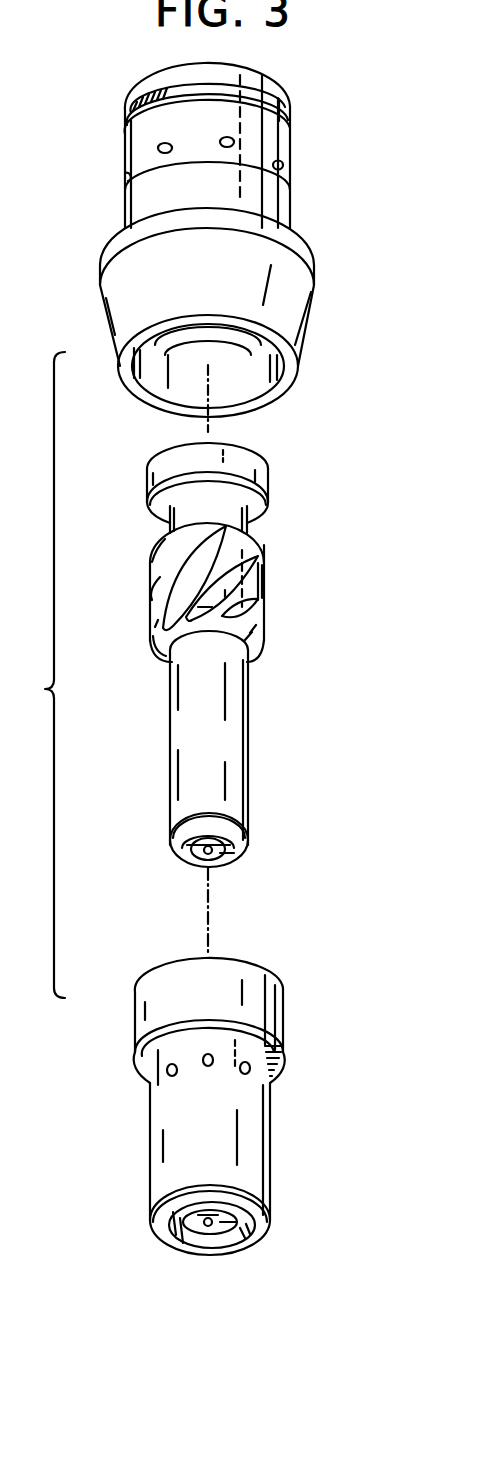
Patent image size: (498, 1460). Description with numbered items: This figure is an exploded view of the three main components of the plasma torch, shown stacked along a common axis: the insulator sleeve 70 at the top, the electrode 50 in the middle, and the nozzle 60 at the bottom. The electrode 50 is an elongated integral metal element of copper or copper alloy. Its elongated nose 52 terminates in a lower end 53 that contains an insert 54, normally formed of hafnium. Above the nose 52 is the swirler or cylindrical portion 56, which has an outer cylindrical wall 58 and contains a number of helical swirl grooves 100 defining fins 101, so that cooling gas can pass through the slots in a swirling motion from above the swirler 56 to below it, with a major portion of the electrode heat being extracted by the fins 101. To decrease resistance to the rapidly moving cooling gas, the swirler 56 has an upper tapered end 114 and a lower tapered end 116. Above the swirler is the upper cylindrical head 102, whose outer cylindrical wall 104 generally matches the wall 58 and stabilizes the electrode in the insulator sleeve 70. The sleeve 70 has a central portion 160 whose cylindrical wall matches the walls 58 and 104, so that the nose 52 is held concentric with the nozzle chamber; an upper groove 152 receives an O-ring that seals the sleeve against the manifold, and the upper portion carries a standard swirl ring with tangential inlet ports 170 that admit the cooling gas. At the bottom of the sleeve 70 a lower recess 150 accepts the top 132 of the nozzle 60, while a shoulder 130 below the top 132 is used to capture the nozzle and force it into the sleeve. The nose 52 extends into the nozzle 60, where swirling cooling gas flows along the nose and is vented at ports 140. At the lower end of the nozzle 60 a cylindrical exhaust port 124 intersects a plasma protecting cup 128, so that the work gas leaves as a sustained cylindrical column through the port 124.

The electrode 50 is at (227, 669).
The nose 52 is at (227, 770).
The lower end 53 is at (182, 853).
The insert 54 is at (223, 850).
The swirler 56 is at (227, 602).
The outer cylindrical wall 58 is at (262, 583).
The nozzle 60 is at (219, 1117).
The insulator sleeve 70 is at (207, 254).
The helical swirl grooves 100 is at (248, 566).
The fins 101 is at (174, 582).
The head 102 is at (250, 497).
The outer cylindrical wall 104 is at (233, 457).
The upper tapered end 114 is at (160, 540).
The lower tapered end 116 is at (160, 653).
The exhaust port 124 is at (208, 1225).
The plasma protecting cup 128 is at (237, 1237).
The shoulder 130 is at (143, 1060).
The top 132 is at (270, 983).
The ports 140 is at (250, 1067).
The lower recess 150 is at (162, 380).
The upper groove 152 is at (287, 110).
The central portion 160 is at (123, 213).
The tangential inlet ports 170 is at (158, 150).